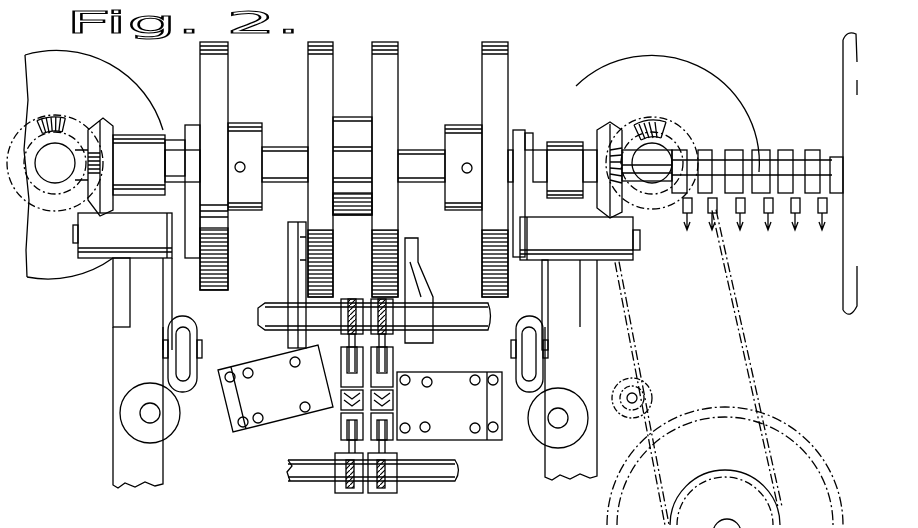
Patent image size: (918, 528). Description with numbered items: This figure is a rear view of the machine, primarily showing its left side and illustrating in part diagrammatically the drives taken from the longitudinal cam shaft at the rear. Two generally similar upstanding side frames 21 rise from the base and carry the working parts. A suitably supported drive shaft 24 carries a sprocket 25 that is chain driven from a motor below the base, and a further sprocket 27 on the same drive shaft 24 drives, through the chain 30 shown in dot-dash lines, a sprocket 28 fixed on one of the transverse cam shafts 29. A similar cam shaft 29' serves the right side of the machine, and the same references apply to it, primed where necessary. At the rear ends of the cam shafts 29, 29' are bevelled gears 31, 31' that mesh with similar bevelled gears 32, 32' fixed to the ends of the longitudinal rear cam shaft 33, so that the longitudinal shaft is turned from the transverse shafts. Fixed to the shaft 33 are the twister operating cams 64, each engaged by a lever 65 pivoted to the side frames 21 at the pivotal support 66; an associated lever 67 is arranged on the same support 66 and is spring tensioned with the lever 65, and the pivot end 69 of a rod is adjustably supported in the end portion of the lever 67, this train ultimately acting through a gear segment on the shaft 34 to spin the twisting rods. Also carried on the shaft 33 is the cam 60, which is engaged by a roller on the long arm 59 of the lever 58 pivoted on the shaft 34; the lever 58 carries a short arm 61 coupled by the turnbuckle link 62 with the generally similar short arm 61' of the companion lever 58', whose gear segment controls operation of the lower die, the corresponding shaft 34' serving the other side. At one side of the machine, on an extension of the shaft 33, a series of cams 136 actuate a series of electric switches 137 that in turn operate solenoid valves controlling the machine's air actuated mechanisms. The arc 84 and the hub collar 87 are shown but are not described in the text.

The side frame 21 is at (113, 378).
The drive shaft 24 is at (739, 503).
The sprocket 25 is at (791, 445).
The sprocket 27 is at (782, 507).
The sprocket 28 is at (659, 116).
The transverse cam shaft 29 is at (660, 135).
The transverse cam shaft 29' is at (55, 141).
The chain 30 is at (748, 337).
The bevelled gear 31 is at (636, 106).
The bevelled gear 31' is at (73, 107).
The bevelled gear 32 is at (597, 156).
The bevelled gear 32' is at (124, 129).
The longitudinal rear cam shaft 33 is at (414, 157).
The shaft 34 is at (374, 297).
The shaft 34' is at (394, 481).
The lever 58 is at (364, 299).
The lever 58' is at (371, 461).
The long arm 59 is at (287, 265).
The cam 60 is at (376, 53).
The short arm 61 is at (401, 360).
The short arm 61' is at (367, 467).
The turnbuckle link 62 is at (372, 418).
The twister operating cam 64 is at (223, 96).
The lever 65 is at (188, 157).
The pivotal support 66 is at (73, 240).
The lever 67 is at (172, 294).
The pivot end 69 is at (188, 342).
The housing arc 84 is at (574, 84).
The hub collar 87 is at (138, 104).
The cams 136 is at (812, 148).
The electric switches 137 is at (822, 216).